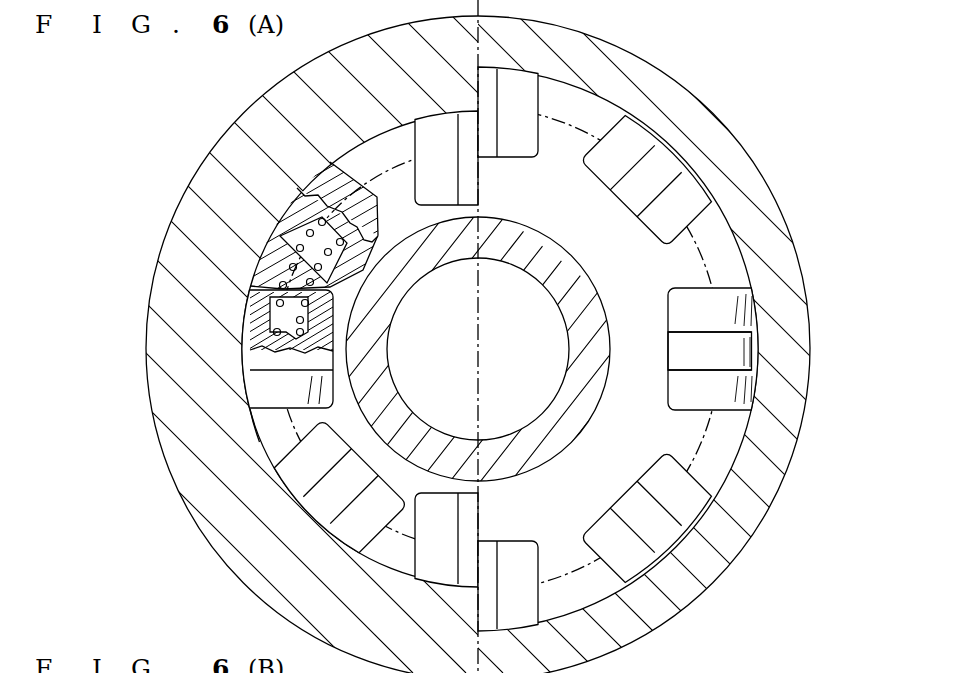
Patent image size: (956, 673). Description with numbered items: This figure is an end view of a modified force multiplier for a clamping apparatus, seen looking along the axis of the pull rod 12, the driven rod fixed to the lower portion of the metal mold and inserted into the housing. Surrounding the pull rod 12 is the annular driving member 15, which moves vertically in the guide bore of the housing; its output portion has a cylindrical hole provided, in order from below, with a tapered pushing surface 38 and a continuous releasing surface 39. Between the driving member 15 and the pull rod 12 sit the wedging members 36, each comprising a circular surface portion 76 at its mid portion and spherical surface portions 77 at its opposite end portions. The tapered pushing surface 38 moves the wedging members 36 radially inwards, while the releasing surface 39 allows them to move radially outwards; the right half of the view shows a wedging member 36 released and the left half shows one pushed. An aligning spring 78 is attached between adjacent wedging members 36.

The pull rod 12 is at (512, 228).
The driving member 15 is at (774, 191).
The wedging member 36 is at (346, 358).
The tapered pushing surface 38 is at (257, 425).
The releasing surface 39 is at (740, 262).
The circular surface portion 76 is at (666, 353).
The spherical surface portion 77 is at (668, 300).
The aligning spring 78 is at (280, 282).